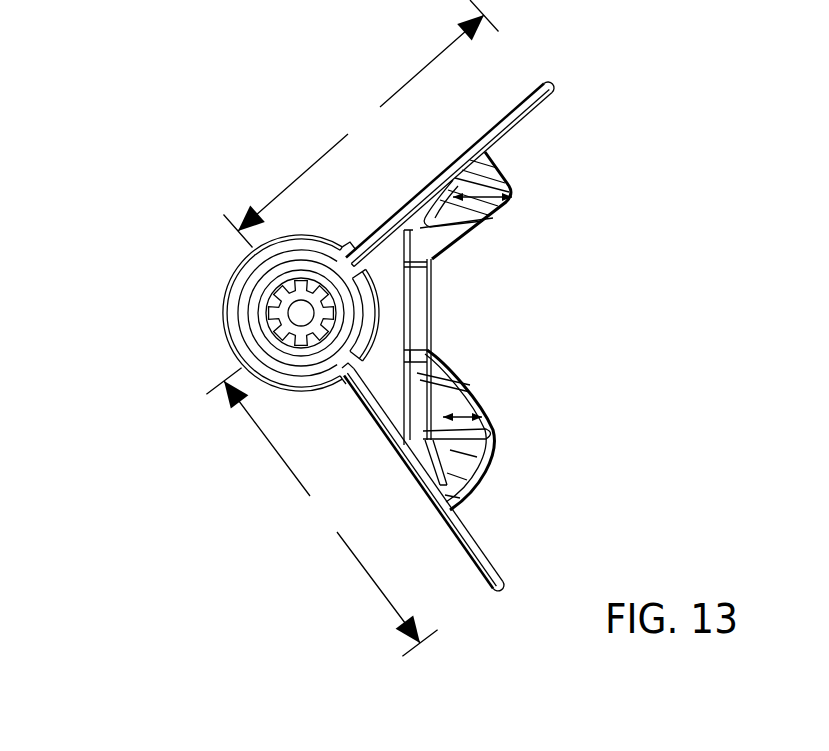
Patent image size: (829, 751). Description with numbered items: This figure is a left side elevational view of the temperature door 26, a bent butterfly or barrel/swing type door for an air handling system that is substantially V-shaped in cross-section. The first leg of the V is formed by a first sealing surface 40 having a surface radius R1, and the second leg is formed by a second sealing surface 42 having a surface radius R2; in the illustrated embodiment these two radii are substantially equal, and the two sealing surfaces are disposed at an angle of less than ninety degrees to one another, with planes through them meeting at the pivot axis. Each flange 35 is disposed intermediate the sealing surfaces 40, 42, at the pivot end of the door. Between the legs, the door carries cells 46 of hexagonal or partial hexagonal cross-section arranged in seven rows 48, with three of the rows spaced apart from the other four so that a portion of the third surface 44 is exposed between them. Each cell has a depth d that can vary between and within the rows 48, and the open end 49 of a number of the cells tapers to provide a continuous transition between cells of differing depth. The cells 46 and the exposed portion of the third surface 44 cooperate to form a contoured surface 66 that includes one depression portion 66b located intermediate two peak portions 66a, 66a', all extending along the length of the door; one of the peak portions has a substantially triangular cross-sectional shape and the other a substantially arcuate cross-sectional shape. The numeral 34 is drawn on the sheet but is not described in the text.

The temperature door 26 is at (121, 113).
The hub 34 is at (296, 316).
The flange 35 is at (383, 393).
The first sealing surface 40 is at (397, 455).
The second sealing surface 42 is at (419, 200).
The third surface 44 is at (430, 295).
The cells 46 is at (478, 490).
The rows 48 is at (466, 232).
The open end 49 is at (500, 156).
The contoured surface 66 is at (522, 184).
The peak portions 66a is at (554, 194).
The peak portions 66a' is at (528, 424).
The depression portion 66b is at (430, 343).
The depth d is at (482, 205).
The surface radius R1 is at (321, 512).
The surface radius R2 is at (361, 124).